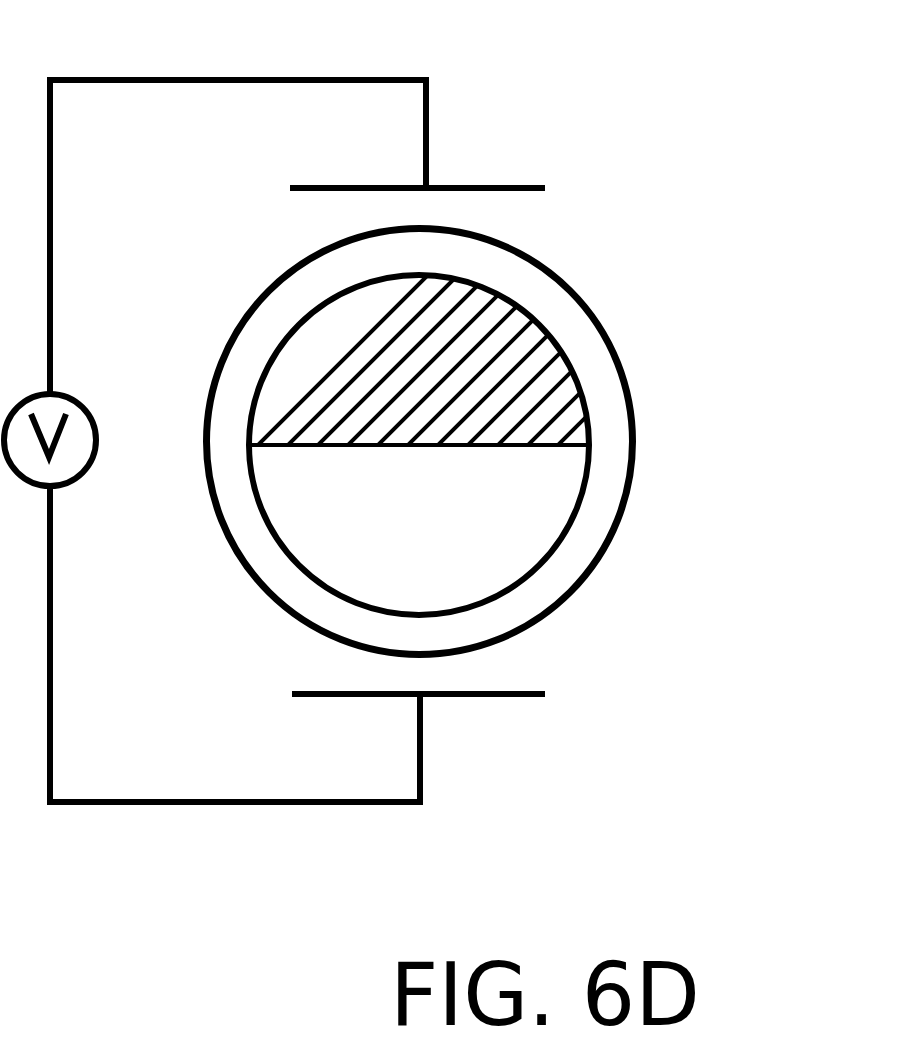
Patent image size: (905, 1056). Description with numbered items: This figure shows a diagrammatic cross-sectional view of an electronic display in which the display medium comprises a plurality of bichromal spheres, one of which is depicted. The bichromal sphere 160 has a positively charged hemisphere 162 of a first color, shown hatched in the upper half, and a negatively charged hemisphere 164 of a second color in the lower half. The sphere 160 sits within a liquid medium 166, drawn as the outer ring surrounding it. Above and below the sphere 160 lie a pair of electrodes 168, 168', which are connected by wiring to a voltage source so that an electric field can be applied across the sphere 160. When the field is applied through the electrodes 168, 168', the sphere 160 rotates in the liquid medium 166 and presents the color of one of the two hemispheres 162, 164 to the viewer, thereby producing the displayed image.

The bichromal sphere 160 is at (852, 76).
The positively charged hemisphere 162 is at (515, 332).
The negatively charged hemisphere 164 is at (467, 550).
The liquid medium 166 is at (612, 403).
The electrode 168 is at (421, 135).
The electrode 168' is at (423, 752).